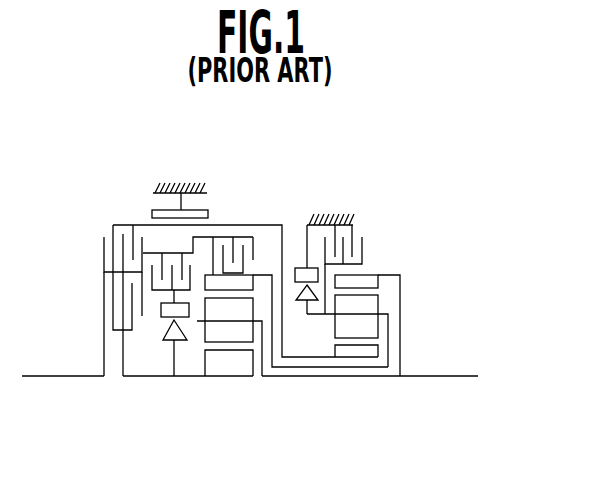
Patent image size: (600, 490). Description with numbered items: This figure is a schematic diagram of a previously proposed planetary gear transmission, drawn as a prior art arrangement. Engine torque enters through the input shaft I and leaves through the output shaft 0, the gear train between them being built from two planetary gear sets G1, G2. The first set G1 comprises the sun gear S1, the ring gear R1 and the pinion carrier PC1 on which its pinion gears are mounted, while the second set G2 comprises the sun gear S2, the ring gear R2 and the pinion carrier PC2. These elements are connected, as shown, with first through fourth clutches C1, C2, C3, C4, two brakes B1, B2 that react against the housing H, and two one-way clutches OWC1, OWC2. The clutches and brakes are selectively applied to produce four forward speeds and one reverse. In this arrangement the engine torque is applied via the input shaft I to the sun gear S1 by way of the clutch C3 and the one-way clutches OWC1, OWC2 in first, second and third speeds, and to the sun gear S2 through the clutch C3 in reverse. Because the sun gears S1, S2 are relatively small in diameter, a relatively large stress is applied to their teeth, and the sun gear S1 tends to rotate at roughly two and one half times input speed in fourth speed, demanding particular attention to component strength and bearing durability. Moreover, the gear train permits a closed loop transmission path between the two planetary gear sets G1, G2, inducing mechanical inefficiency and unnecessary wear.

The first brake B1 is at (146, 209).
The second clutch C2 is at (99, 252).
The first clutch C1 is at (99, 309).
The input shaft I is at (47, 377).
The third clutch C3 is at (155, 304).
The first one-way clutch OWC1 is at (167, 347).
The fourth clutch C4 is at (247, 232).
The first ring gear R1 is at (210, 275).
The first pinion carrier PC1 is at (231, 322).
The first sun gear S1 is at (218, 365).
The first planetary gear set G1 is at (218, 382).
The housing H is at (328, 214).
The second brake B2 is at (362, 228).
The second one-way clutch OWC2 is at (303, 305).
The second planetary gear set G2 is at (405, 269).
The second ring gear R2 is at (365, 281).
The second pinion carrier PC2 is at (385, 315).
The second sun gear S2 is at (374, 348).
The output shaft 0 is at (450, 376).